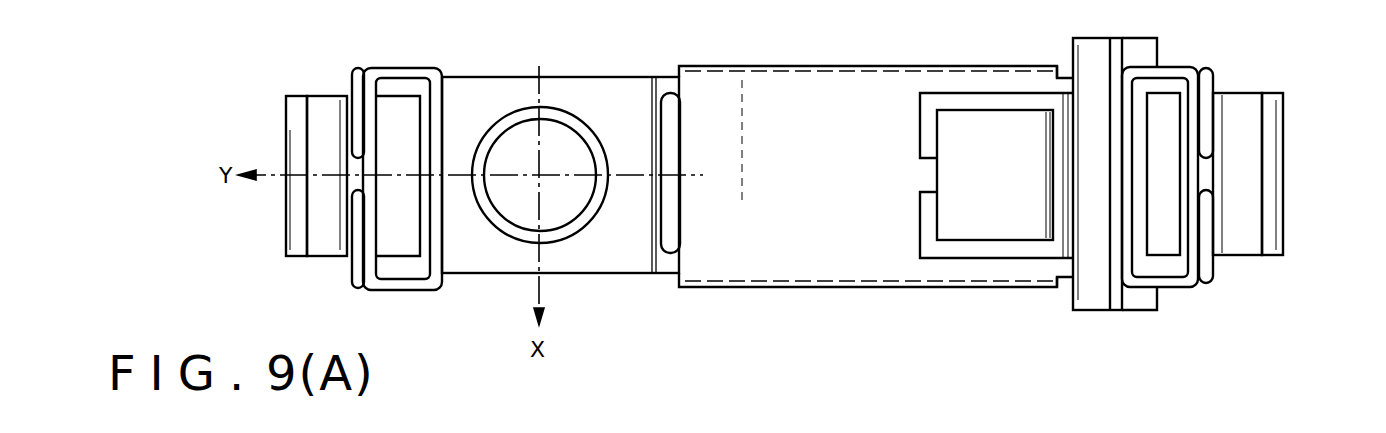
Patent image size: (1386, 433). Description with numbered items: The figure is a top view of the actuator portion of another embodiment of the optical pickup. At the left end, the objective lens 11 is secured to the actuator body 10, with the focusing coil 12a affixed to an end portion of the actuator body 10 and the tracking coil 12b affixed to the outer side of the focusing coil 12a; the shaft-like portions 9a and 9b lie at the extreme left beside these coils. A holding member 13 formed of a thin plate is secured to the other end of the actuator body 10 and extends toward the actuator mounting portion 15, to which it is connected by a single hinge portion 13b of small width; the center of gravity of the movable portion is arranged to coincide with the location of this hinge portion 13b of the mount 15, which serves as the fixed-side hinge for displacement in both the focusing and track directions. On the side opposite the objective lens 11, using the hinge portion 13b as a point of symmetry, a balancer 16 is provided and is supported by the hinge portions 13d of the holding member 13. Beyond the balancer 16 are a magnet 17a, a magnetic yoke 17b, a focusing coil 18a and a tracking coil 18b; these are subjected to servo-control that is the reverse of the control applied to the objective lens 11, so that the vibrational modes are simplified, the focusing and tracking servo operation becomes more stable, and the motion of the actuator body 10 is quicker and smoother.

The shaft portion 9a is at (322, 96).
The shaft end portion 9b is at (290, 96).
The actuator body 10 is at (627, 77).
The objective lens 11 is at (560, 130).
The focusing coil 12a is at (418, 68).
The tracking coil 12b is at (357, 72).
The holding member 13 is at (836, 87).
The hinge portion 13b is at (930, 176).
The hinge portion 13d is at (1065, 72).
The actuator mounting portion 15 is at (980, 115).
The balancer 16 is at (1105, 312).
The magnet 17a is at (1243, 93).
The magnetic yoke 17b is at (1270, 93).
The focusing coil 18a is at (1168, 67).
The tracking coil 18b is at (1205, 285).